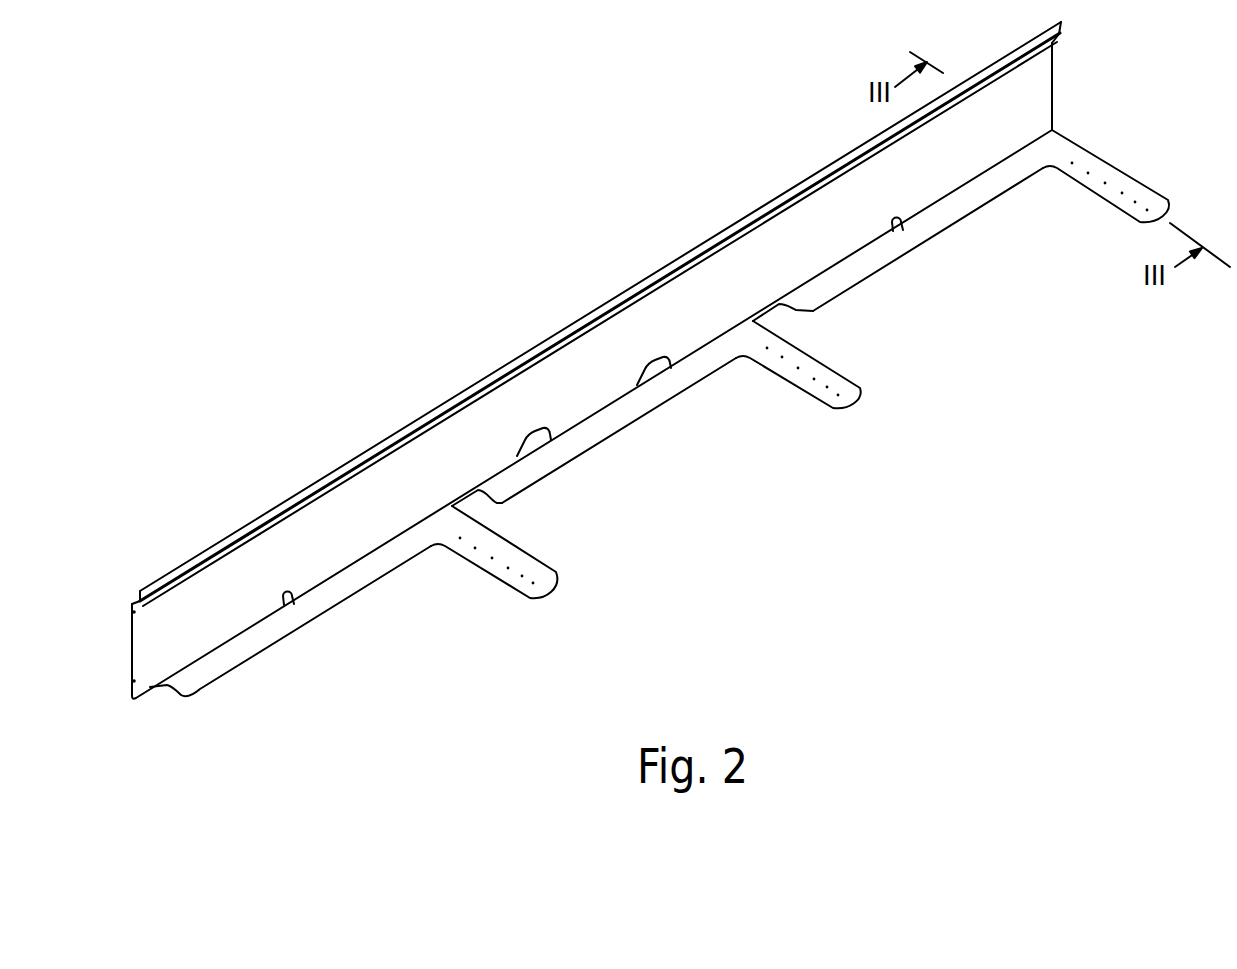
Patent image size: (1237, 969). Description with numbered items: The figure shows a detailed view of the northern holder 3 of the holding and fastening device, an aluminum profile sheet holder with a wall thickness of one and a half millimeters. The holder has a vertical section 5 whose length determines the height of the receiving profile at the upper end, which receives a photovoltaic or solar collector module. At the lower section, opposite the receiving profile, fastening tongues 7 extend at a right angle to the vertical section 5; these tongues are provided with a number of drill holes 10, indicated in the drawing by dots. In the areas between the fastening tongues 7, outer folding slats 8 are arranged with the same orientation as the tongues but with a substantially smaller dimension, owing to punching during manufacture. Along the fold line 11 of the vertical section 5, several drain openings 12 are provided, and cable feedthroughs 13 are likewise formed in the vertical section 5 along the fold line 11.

The northern holder 3 is at (300, 325).
The vertical section 5 is at (767, 283).
The fastening tongues 7 is at (543, 578).
The outer folding slats 8 is at (200, 673).
The drill holes 10 is at (492, 558).
The fold line 11 is at (507, 468).
The drain openings 12 is at (530, 432).
The cable feedthroughs 13 is at (295, 603).